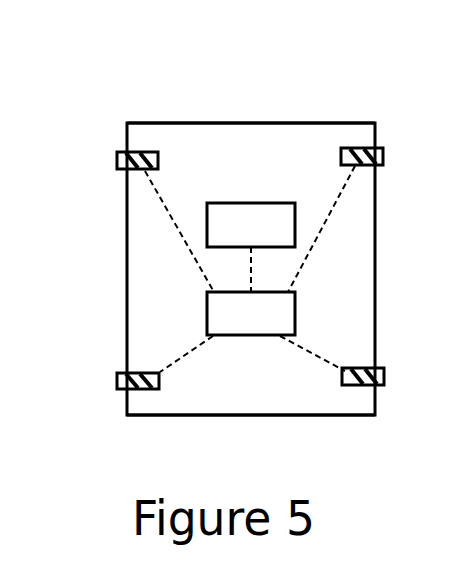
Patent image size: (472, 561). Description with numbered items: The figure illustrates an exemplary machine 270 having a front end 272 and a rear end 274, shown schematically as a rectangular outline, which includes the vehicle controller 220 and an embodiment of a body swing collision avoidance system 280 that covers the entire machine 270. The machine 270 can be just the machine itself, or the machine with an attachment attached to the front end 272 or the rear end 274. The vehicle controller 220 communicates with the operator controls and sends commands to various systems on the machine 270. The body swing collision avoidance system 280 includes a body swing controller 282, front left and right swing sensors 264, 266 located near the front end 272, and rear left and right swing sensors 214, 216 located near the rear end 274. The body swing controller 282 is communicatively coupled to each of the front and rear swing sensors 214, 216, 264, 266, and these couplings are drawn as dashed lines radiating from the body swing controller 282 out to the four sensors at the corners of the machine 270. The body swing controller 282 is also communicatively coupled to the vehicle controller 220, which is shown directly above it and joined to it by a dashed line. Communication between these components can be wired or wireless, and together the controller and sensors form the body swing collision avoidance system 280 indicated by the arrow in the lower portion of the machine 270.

The machine 270 is at (264, 83).
The front end 272 is at (212, 121).
The rear end 274 is at (183, 418).
The front left swing sensor 264 is at (118, 155).
The front right swing sensor 266 is at (358, 150).
The rear left swing sensor 214 is at (118, 377).
The rear right swing sensor 216 is at (353, 380).
The vehicle controller 220 is at (251, 225).
The body swing controller 282 is at (251, 291).
The body swing collision avoidance system 280 is at (251, 364).